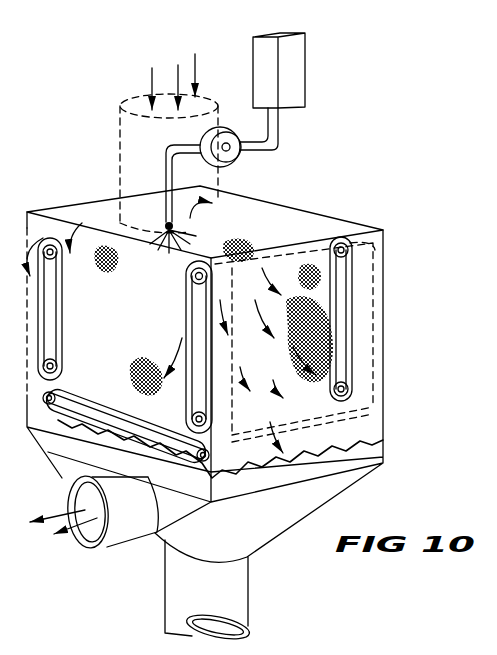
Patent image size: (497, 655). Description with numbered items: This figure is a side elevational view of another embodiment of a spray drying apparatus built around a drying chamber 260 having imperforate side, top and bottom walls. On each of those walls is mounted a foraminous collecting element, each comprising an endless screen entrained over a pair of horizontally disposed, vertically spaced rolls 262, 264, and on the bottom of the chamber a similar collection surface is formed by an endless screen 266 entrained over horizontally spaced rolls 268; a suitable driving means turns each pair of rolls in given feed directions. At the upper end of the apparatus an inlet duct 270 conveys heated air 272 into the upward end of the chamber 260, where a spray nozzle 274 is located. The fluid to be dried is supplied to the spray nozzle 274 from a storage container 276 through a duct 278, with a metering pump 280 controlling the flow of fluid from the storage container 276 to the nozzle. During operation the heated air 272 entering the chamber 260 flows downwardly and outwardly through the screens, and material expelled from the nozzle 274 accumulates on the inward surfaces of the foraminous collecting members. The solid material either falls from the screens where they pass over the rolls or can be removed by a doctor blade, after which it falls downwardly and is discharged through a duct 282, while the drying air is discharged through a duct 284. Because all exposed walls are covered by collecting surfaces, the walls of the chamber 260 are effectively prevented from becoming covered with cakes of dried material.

The drying chamber 260 is at (392, 259).
The roll 262 is at (42, 316).
The roll 264 is at (46, 250).
The endless screen 266 is at (386, 433).
The rolls 268 is at (55, 412).
The inlet duct 270 is at (120, 157).
The heated air 272 is at (152, 97).
The spray nozzle 274 is at (176, 229).
The storage container 276 is at (303, 80).
The duct 278 is at (278, 145).
The metering pump 280 is at (239, 164).
The duct 282 is at (243, 612).
The duct 284 is at (95, 532).